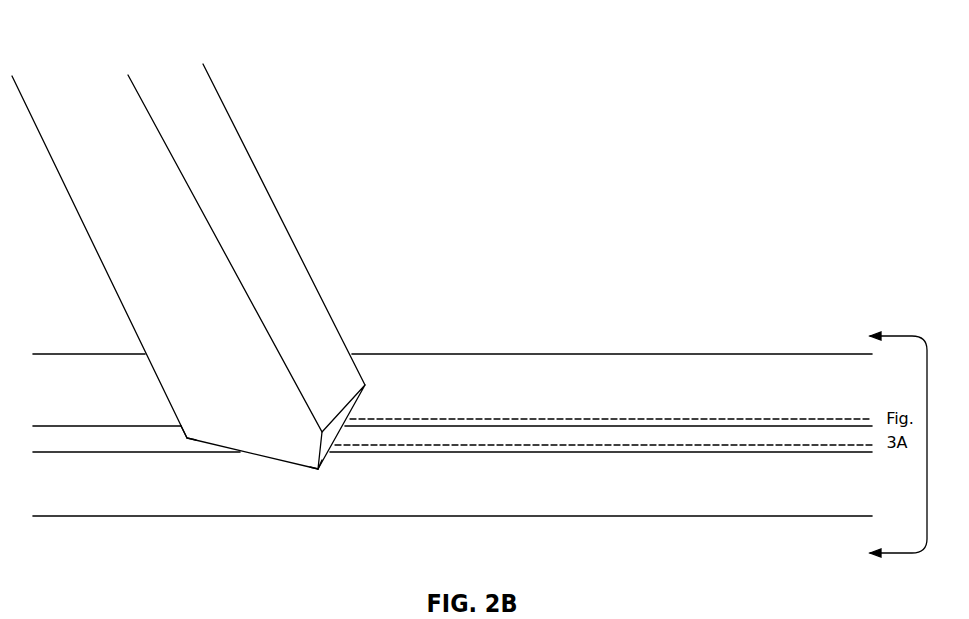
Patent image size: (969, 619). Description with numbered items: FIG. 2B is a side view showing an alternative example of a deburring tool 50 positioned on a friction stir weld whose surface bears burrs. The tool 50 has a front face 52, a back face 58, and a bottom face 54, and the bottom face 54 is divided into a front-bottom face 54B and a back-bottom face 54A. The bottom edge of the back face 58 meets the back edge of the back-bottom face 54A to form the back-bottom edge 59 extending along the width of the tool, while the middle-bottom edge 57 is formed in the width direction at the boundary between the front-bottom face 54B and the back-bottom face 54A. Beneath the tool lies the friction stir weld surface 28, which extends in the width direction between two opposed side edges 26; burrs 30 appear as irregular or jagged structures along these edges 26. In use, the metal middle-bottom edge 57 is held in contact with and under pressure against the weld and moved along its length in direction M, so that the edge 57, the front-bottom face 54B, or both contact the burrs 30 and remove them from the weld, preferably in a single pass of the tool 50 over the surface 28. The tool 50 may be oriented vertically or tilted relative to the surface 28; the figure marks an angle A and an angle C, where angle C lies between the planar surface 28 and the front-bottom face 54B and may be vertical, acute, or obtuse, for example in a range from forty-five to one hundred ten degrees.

The deburring tool 50 is at (278, 62).
The front face 52 is at (260, 218).
The bottom face 54 is at (275, 465).
The back-bottom face 54A is at (198, 442).
The front-bottom face 54B is at (342, 425).
The middle-bottom edge 57 is at (327, 463).
The back face 58 is at (76, 226).
The back-bottom edge 59 is at (190, 437).
The side edges 26 is at (648, 426).
The burrs 30 is at (597, 419).
The friction stir weld surface 28 is at (675, 436).
The direction of movement M is at (287, 115).
The rake angle A is at (253, 450).
The angle C is at (362, 397).